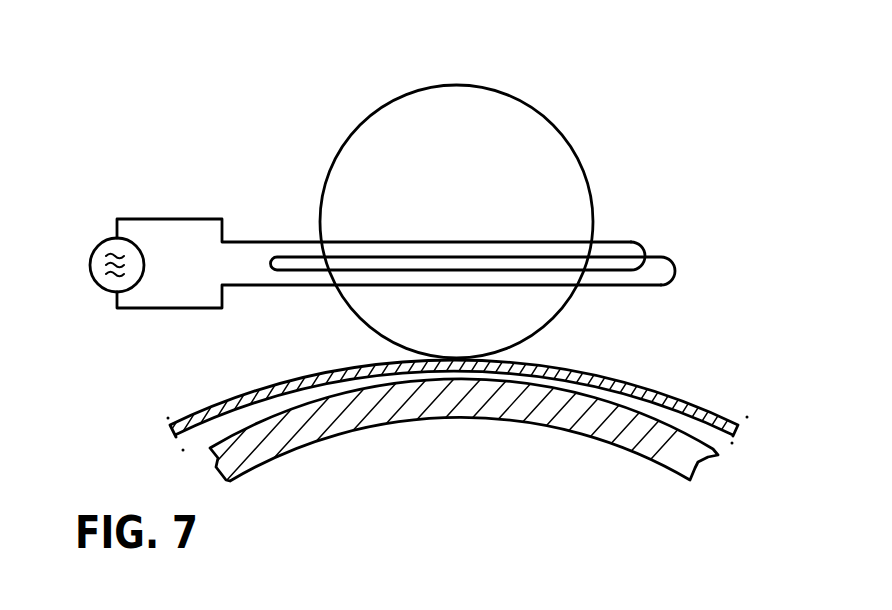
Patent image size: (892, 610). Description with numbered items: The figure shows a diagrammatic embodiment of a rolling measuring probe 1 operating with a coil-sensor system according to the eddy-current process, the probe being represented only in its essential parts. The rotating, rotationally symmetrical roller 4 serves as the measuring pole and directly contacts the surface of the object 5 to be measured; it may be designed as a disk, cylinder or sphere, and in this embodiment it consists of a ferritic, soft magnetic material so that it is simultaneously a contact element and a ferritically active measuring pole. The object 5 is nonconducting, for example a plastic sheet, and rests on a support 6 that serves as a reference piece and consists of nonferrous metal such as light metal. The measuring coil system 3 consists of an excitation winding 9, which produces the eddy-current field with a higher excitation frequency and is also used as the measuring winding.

The measuring probe 1 is at (534, 98).
The measuring coil system 3 is at (279, 222).
The roller 4 is at (567, 140).
The object to be measured 5 is at (687, 398).
The support 6 is at (700, 464).
The excitation winding 9 is at (663, 255).